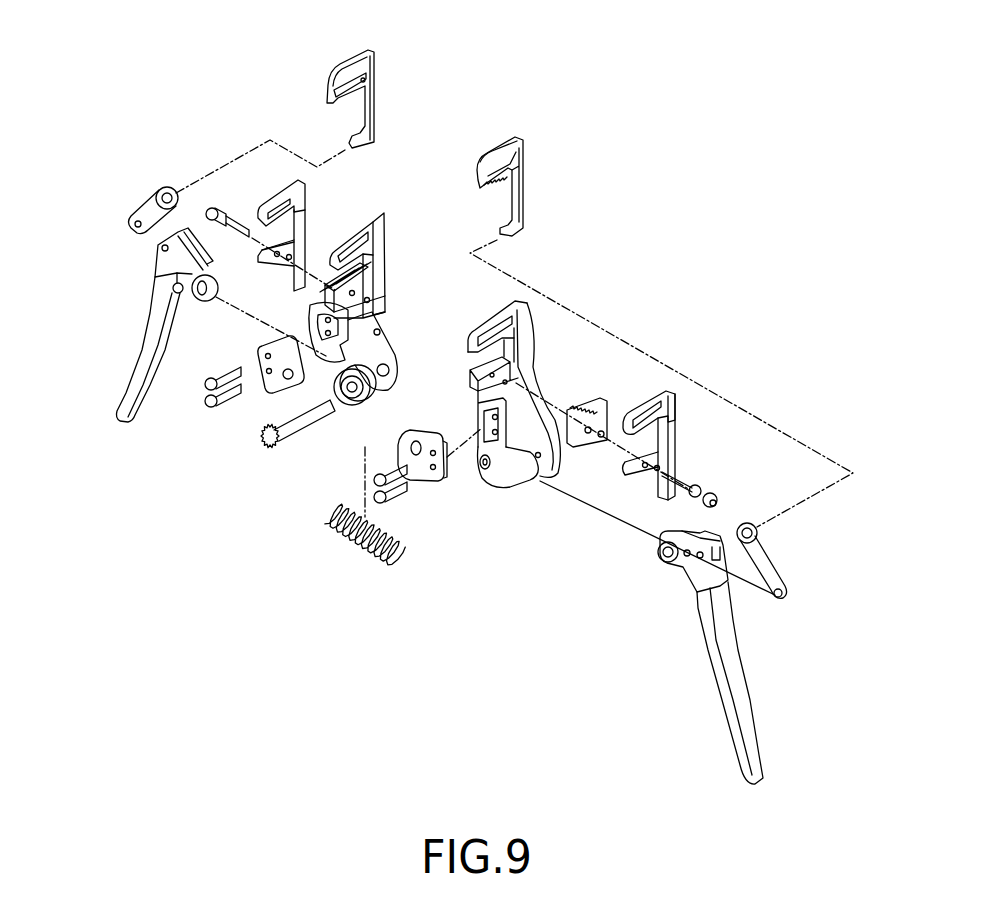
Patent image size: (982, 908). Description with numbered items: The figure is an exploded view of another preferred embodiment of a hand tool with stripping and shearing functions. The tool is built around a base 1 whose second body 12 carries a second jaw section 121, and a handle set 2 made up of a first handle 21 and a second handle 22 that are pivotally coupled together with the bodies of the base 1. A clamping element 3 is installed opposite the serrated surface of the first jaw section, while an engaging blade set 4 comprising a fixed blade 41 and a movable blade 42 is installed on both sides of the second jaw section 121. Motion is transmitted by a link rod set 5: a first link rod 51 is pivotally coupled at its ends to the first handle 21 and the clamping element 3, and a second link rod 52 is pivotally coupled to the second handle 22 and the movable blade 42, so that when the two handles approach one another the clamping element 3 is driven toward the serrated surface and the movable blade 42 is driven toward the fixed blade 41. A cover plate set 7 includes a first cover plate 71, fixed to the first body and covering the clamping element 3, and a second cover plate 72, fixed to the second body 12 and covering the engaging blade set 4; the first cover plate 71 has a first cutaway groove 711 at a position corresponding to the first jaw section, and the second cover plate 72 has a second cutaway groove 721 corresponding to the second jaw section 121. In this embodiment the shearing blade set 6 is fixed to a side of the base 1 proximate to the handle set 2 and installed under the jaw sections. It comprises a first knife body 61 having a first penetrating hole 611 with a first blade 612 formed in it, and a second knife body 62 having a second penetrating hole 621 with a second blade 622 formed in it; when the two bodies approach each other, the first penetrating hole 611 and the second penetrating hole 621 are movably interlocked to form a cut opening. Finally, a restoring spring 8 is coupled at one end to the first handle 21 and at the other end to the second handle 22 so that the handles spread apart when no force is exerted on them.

The base 1 is at (510, 381).
The second body 12 is at (541, 387).
The second jaw section 121 is at (484, 332).
The handle set 2 is at (737, 657).
The second handle 22 is at (730, 712).
The first handle 21 is at (143, 348).
The clamping element 3 is at (340, 73).
The engaging blade set 4 is at (524, 158).
The fixed blade 41 is at (603, 410).
The movable blade 42 is at (524, 153).
The link rod set 5 is at (783, 550).
The first link rod 51 is at (150, 203).
The second link rod 52 is at (780, 537).
The shearing blade set 6 is at (396, 468).
The first knife body 61 is at (277, 383).
The first penetrating hole 611 is at (248, 372).
The first blade 612 is at (290, 338).
The second knife body 62 is at (401, 442).
The second penetrating hole 621 is at (401, 453).
The second blade 622 is at (434, 418).
The cover plate set 7 is at (274, 187).
The first cover plate 71 is at (258, 200).
The first cutaway groove 711 is at (290, 203).
The second cover plate 72 is at (688, 427).
The second cutaway groove 721 is at (647, 420).
The restoring spring 8 is at (353, 552).